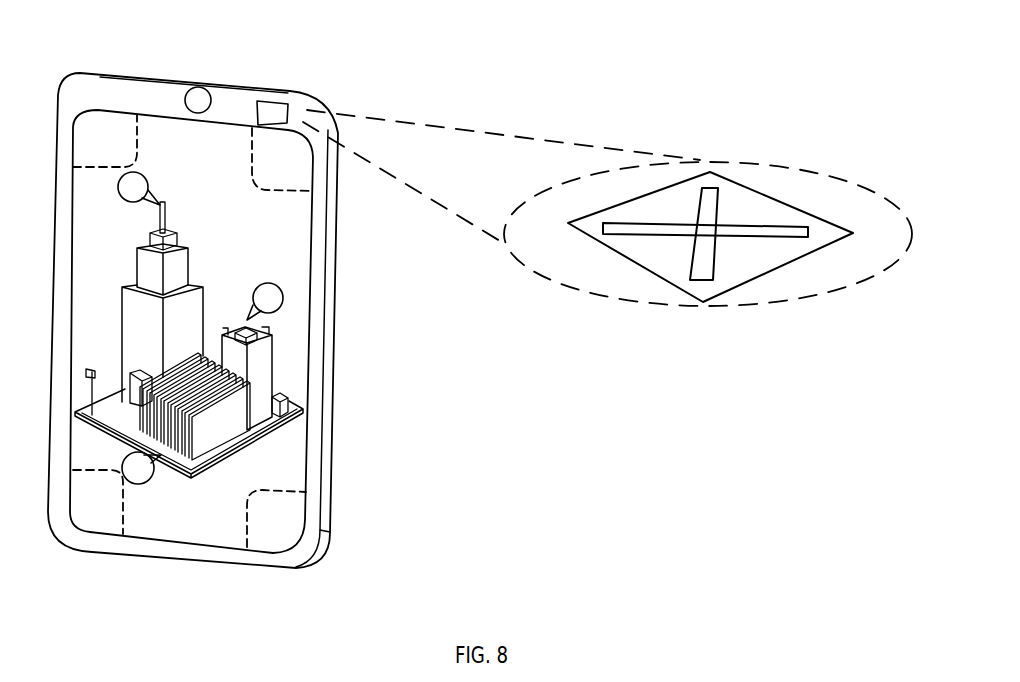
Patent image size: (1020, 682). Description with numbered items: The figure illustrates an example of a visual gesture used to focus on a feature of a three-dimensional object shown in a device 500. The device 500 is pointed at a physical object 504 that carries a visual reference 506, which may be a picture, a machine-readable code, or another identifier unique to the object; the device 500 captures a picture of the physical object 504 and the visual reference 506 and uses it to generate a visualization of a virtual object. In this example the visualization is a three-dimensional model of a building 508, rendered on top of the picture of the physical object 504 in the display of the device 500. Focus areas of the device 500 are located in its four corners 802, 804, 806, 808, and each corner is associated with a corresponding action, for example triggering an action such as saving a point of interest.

The device 500 is at (170, 95).
The physical object 504 is at (650, 257).
The visual reference 506 is at (702, 265).
The three-dimensional model of a building 508 is at (288, 372).
The corner 802 is at (107, 140).
The corner 804 is at (282, 160).
The corner 806 is at (277, 521).
The corner 808 is at (100, 498).